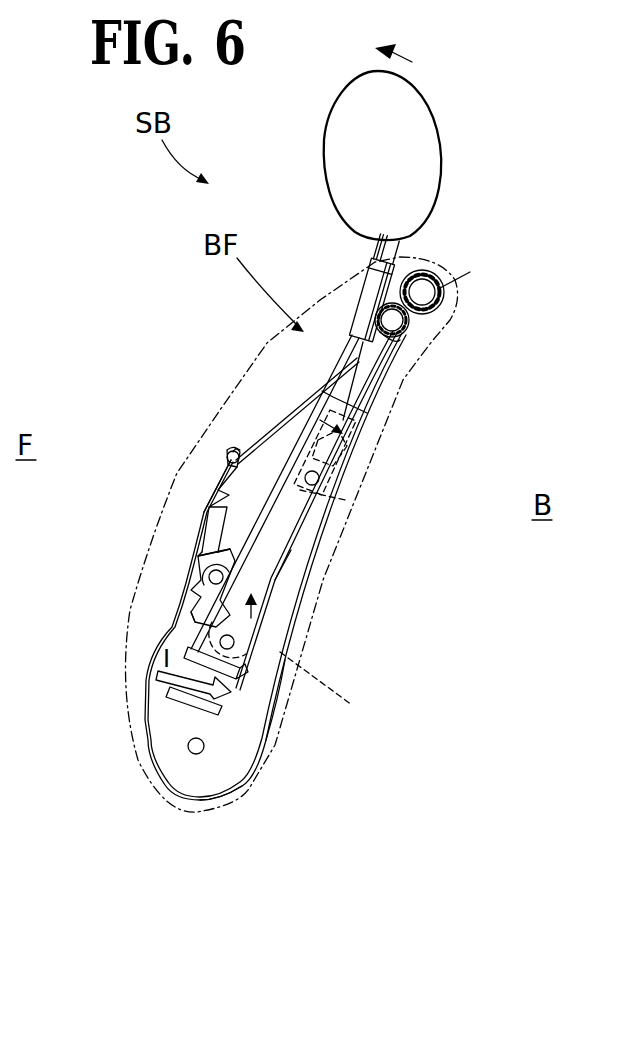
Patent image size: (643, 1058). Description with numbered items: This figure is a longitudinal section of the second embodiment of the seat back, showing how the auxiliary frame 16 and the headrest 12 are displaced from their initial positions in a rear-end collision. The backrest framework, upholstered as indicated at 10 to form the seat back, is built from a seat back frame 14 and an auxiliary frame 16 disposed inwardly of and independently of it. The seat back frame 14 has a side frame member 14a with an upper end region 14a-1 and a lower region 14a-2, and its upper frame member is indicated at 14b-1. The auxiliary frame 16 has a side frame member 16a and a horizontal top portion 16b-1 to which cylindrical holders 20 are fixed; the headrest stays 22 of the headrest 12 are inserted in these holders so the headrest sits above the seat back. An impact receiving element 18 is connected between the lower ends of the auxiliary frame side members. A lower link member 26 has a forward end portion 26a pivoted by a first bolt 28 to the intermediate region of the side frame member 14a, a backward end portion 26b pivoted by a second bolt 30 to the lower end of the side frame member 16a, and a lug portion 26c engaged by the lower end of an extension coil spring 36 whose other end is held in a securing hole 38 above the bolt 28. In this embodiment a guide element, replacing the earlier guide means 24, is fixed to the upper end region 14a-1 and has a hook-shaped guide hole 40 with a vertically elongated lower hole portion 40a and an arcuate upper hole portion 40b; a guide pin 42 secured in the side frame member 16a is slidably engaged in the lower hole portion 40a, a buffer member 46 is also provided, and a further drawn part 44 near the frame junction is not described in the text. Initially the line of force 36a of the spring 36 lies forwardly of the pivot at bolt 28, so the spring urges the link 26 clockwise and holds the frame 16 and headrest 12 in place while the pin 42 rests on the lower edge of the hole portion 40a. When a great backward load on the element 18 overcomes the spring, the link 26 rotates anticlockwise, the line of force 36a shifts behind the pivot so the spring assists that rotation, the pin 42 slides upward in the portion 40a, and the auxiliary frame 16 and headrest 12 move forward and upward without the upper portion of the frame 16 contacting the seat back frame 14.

The upholstery 10 is at (272, 335).
The headrest 12 is at (439, 164).
The seat back frame 14 is at (280, 645).
The side frame member 14a is at (150, 650).
The upper end region 14a-1 is at (245, 447).
The lower region 14a-2 is at (245, 768).
The upper frame member portion 14b-1 is at (405, 303).
The auxiliary frame 16 is at (296, 579).
The side frame member 16a is at (280, 555).
The horizontal top portion 16b-1 is at (410, 335).
The impact receiving element 18 is at (250, 703).
The cylindrical holder 20 is at (365, 297).
The headrest stay 22 is at (375, 244).
The guide means 24 is at (305, 412).
The lower link member 26 is at (183, 595).
The forward end portion 26a is at (208, 552).
The backward end portion 26b is at (311, 675).
The lug portion 26c is at (190, 620).
The first bolt 28 is at (275, 493).
The second bolt 30 is at (250, 674).
The extension coil spring 36 is at (222, 488).
The line of force 36a is at (223, 525).
The securing hole 38 is at (223, 447).
The guide hole 40 is at (363, 427).
The lower hole portion 40a is at (286, 423).
The upper hole portion 40b is at (347, 463).
The guide pin 42 is at (350, 497).
The pivot bearing 44 is at (330, 405).
The buffer member 46 is at (445, 278).